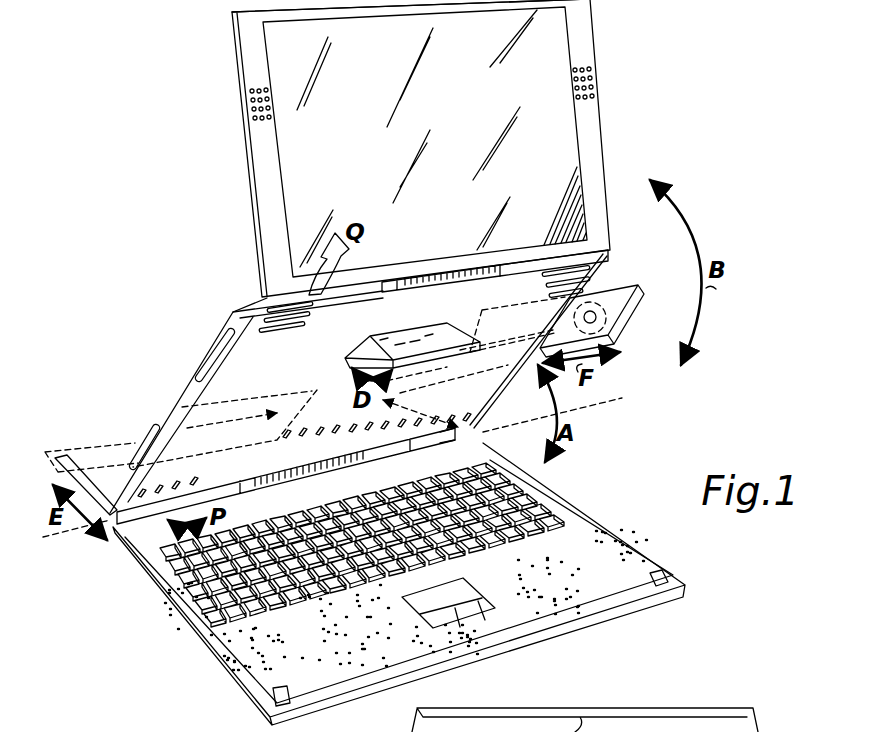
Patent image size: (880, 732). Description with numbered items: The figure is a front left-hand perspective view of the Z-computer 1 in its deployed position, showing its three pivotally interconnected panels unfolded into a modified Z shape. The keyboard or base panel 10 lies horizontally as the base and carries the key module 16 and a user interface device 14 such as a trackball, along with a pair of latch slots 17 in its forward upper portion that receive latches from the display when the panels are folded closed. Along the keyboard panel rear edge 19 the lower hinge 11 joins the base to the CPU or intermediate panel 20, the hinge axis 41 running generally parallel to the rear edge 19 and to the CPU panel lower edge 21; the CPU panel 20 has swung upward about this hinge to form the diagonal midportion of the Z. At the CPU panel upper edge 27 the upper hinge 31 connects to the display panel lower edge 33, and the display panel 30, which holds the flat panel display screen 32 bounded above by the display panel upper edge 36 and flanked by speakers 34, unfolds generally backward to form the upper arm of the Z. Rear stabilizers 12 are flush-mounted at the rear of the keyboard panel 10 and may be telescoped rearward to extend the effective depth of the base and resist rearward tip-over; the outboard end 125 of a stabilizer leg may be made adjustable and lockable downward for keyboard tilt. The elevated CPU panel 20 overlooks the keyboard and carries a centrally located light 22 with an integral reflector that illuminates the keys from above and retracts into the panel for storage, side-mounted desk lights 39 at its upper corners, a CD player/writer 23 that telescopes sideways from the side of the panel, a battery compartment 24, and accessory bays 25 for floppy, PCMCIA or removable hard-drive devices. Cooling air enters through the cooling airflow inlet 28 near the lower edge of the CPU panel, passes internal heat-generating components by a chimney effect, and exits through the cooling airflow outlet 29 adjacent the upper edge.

The Z-computer 1 is at (638, 145).
The keyboard or base panel 10 is at (188, 641).
The lower hinge 11 is at (335, 474).
The rear stabilizer 12 is at (436, 396).
The outboard end of stabilizer leg 125 is at (65, 455).
The user interface device 14 is at (490, 599).
The key module 16 is at (354, 599).
The latch slot 17 is at (651, 578).
The keyboard panel rear edge 19 is at (462, 436).
The CPU or intermediate panel 20 is at (182, 370).
The CPU panel lower edge 21 is at (247, 414).
The light 22 is at (450, 325).
The CD player/writer 23 is at (620, 291).
The battery compartment 24 is at (225, 428).
The accessory bays 25 is at (207, 352).
The CPU panel upper edge 27 is at (392, 290).
The cooling airflow inlet 28 is at (210, 493).
The cooling airflow outlet 29 is at (304, 322).
The display panel 30 is at (238, 207).
The upper hinge 31 is at (435, 262).
The flat panel display screen 32 is at (476, 112).
The display panel lower edge 33 is at (527, 262).
The speaker 34 is at (249, 116).
The display panel upper edge 36 is at (404, 3).
The side-mounted desk lights 39 is at (254, 308).
The hinge axis 41 is at (600, 408).